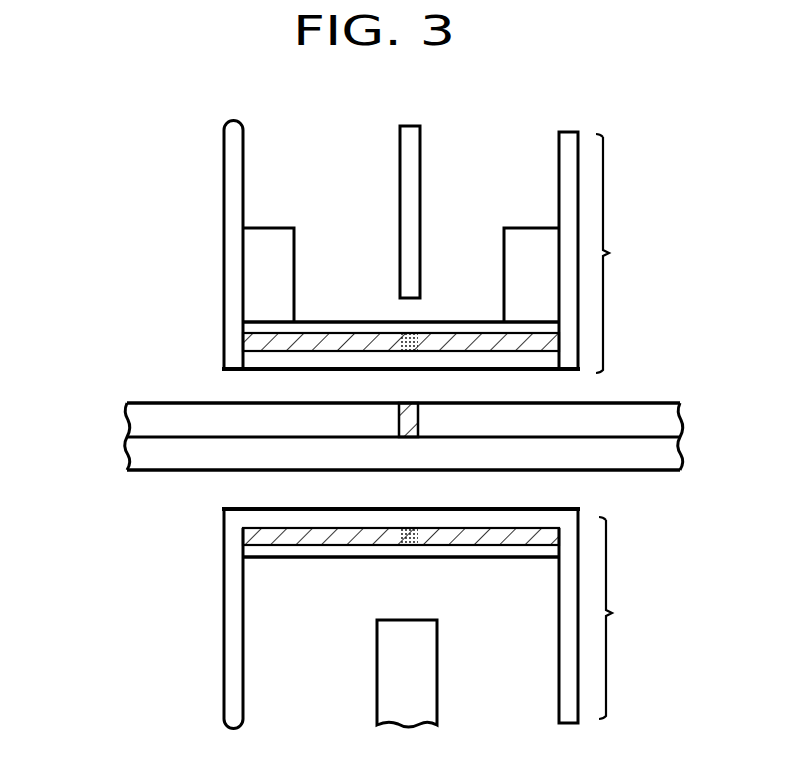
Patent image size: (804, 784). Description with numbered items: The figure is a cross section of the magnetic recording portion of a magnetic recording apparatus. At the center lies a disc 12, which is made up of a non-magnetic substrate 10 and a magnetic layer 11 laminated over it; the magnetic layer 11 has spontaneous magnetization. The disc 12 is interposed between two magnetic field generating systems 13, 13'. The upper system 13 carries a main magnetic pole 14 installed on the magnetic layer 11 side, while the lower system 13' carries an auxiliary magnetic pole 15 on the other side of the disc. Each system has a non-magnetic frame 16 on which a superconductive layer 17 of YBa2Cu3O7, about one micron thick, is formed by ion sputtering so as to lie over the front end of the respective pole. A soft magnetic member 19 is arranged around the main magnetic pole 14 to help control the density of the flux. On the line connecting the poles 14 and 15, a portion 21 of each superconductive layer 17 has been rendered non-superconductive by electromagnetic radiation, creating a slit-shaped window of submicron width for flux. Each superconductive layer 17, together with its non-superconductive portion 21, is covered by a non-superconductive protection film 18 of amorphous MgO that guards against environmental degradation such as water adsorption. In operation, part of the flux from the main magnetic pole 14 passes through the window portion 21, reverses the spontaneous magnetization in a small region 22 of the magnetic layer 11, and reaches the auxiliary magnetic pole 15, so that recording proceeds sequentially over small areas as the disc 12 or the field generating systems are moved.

The non-magnetic substrate 10 is at (674, 462).
The magnetic layer 11 is at (676, 422).
The disc 12 is at (392, 441).
The magnetic field generating system 13 is at (624, 253).
The magnetic field generating system 13' is at (628, 618).
The main magnetic pole 14 is at (400, 150).
The auxiliary magnetic pole 15 is at (430, 694).
The non-magnetic frame 16 is at (228, 262).
The superconductive layer 17 is at (247, 343).
The non-superconductive protection film 18 is at (343, 330).
The soft magnetic member 19 is at (271, 240).
The non-superconductive portion 21 is at (408, 352).
The small region 22 is at (406, 403).